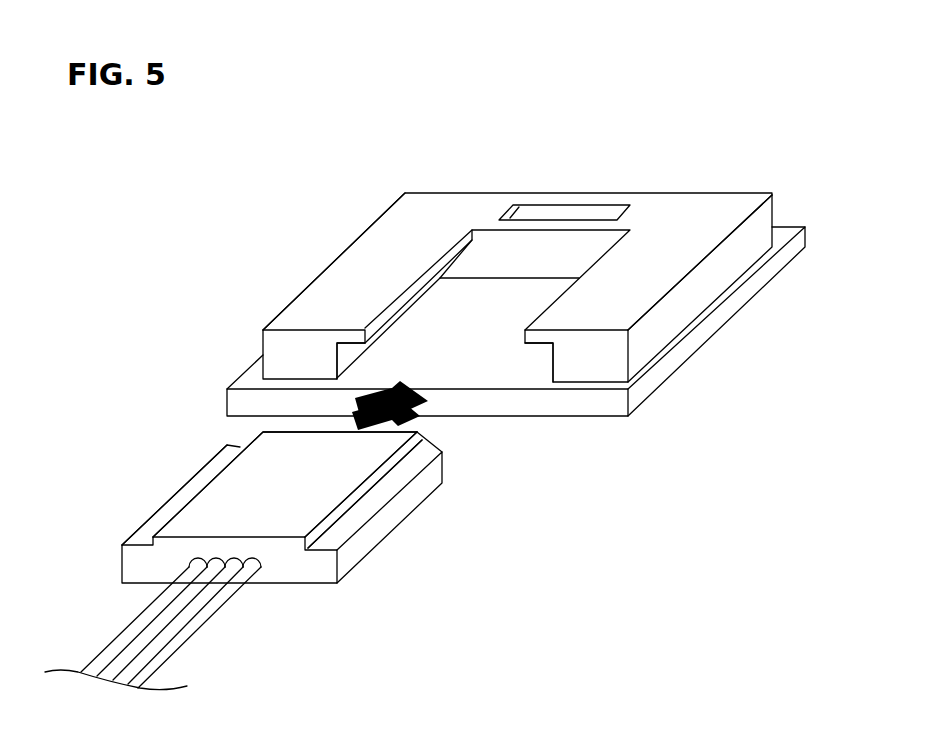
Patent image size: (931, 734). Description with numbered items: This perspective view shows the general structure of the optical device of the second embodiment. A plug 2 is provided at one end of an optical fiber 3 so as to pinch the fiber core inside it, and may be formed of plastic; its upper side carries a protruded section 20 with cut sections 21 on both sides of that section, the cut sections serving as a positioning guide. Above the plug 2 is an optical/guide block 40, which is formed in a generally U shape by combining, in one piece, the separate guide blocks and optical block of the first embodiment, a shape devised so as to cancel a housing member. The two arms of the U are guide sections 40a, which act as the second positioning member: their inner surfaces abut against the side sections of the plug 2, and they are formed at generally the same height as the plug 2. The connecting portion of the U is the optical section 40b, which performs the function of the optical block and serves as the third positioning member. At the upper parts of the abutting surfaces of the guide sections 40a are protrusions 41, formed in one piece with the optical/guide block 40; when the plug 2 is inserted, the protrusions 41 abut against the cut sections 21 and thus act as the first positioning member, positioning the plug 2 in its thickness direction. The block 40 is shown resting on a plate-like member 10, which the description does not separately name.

The plug 2 is at (408, 540).
The optical fiber 3 is at (213, 642).
The base plate 10 is at (730, 307).
The protruded section 20 is at (260, 474).
The cut sections 21 is at (173, 507).
The optical/guide block 40 is at (465, 208).
The guide sections 40a is at (363, 272).
The optical section 40b is at (580, 200).
The protrusions 41 is at (340, 350).